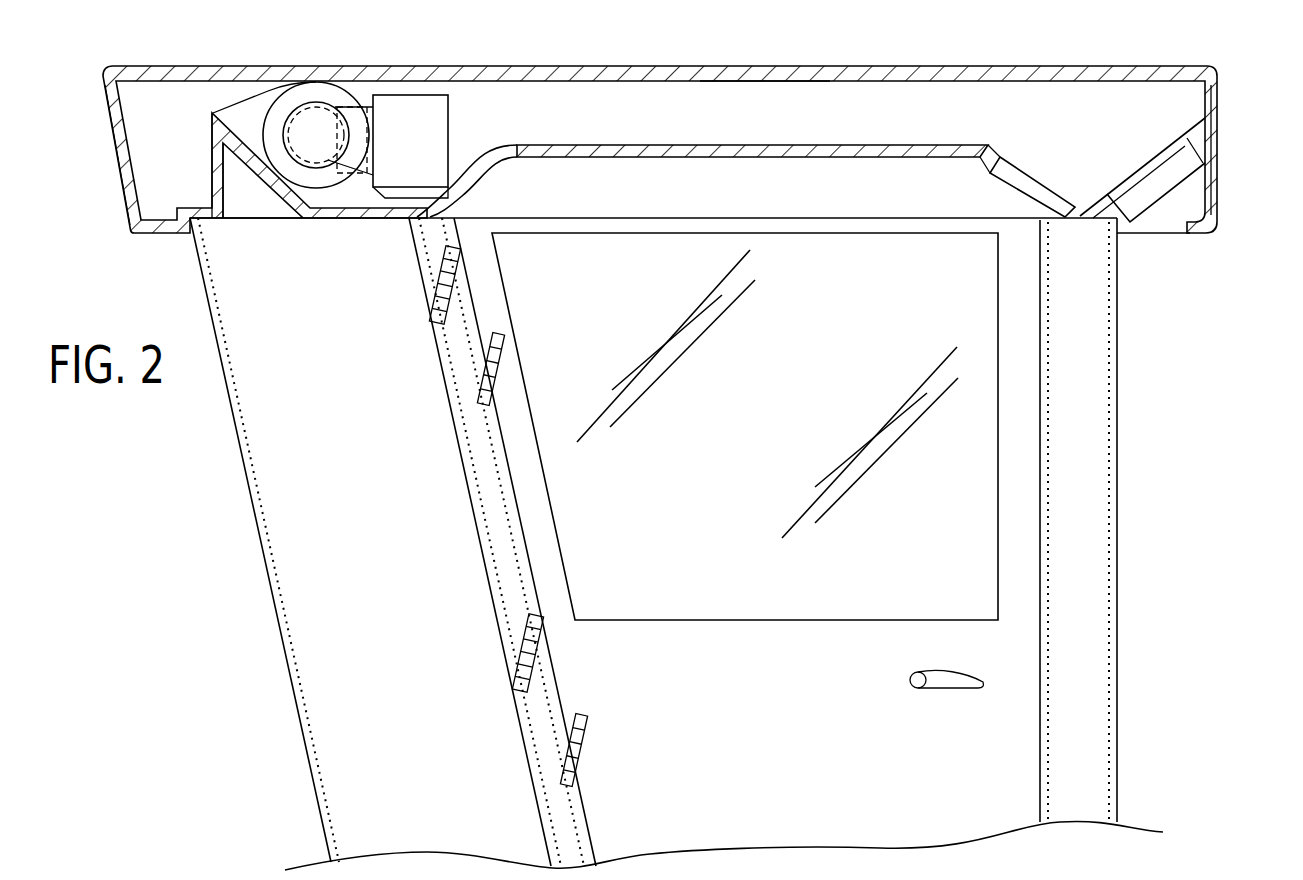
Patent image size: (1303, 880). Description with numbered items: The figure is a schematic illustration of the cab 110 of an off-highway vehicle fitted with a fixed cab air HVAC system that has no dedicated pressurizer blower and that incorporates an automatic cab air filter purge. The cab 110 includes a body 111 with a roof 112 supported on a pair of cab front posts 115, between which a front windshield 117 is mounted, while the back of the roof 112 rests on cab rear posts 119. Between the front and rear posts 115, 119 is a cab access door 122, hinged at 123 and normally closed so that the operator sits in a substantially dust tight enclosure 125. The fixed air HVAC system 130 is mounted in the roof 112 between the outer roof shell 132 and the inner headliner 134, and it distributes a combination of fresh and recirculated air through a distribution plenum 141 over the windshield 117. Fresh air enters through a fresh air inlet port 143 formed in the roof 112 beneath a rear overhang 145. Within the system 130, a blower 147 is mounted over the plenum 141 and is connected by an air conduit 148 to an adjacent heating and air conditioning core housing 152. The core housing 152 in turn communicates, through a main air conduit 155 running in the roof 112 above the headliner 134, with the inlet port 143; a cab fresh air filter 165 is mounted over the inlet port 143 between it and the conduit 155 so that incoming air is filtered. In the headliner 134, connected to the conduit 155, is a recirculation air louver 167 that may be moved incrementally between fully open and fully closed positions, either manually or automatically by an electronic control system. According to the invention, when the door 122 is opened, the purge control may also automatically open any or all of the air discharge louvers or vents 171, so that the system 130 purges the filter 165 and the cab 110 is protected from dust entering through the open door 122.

The cab 110 is at (650, 544).
The body 111 is at (653, 542).
The roof 112 is at (684, 156).
The cab front posts 115 is at (473, 431).
The front windshield 117 is at (327, 424).
The cab rear posts 119 is at (1097, 527).
The cab access door 122 is at (834, 757).
The hinge 123 is at (478, 350).
The dust tight enclosure 125 is at (760, 475).
The fixed air HVAC system 130 is at (497, 97).
The outer roof shell 132 is at (907, 68).
The inner headliner 134 is at (731, 160).
The distribution plenum 141 is at (230, 163).
The fresh air inlet port 143 is at (1157, 235).
The rear overhang 145 is at (1215, 108).
The blower 147 is at (294, 104).
The air conduit 148 is at (364, 106).
The heating and air conditioning core housing 152 is at (430, 133).
The main air conduit 155 is at (763, 88).
The cab fresh air filter 165 is at (1170, 165).
The recirculation air louver 167 is at (1032, 170).
The air discharge louvers/vents 171 is at (435, 280).